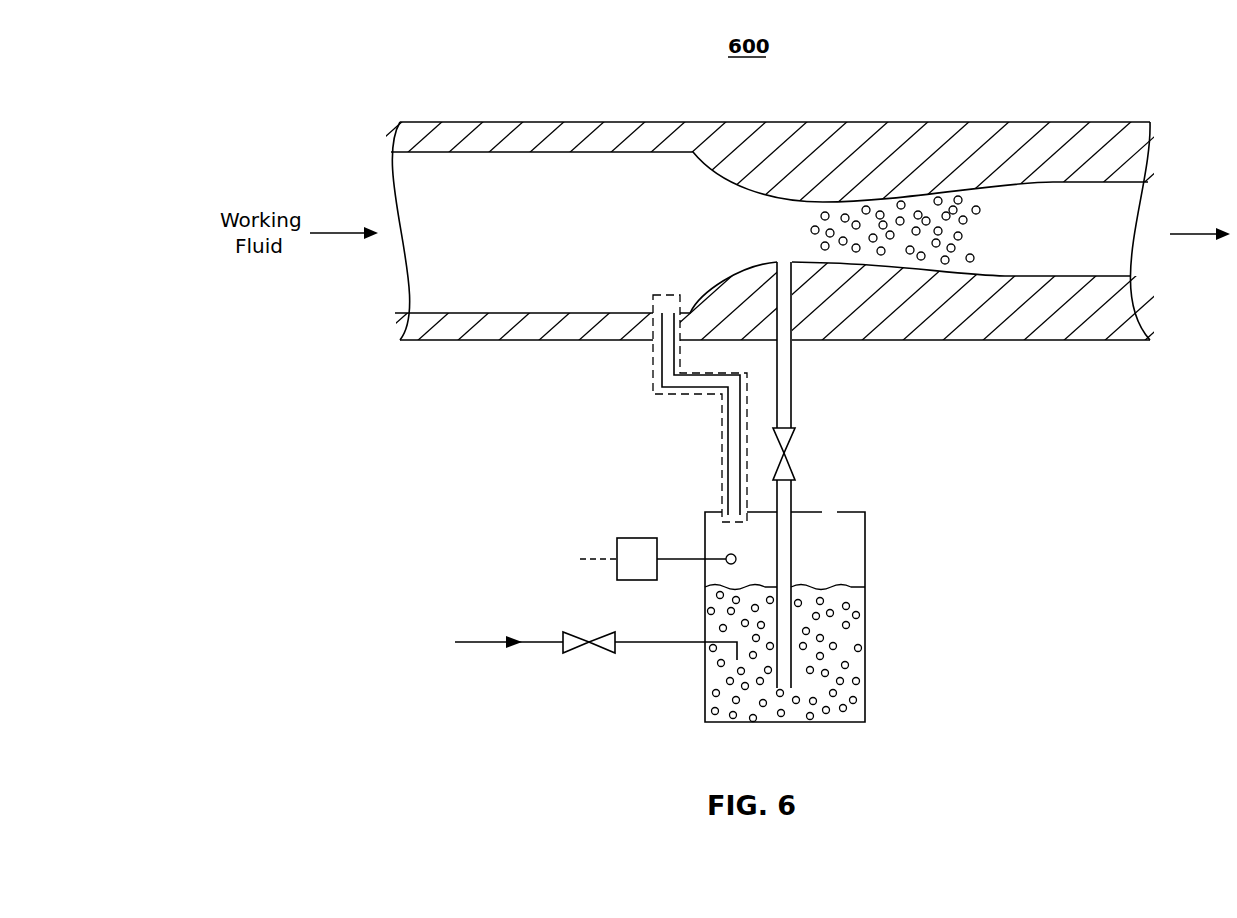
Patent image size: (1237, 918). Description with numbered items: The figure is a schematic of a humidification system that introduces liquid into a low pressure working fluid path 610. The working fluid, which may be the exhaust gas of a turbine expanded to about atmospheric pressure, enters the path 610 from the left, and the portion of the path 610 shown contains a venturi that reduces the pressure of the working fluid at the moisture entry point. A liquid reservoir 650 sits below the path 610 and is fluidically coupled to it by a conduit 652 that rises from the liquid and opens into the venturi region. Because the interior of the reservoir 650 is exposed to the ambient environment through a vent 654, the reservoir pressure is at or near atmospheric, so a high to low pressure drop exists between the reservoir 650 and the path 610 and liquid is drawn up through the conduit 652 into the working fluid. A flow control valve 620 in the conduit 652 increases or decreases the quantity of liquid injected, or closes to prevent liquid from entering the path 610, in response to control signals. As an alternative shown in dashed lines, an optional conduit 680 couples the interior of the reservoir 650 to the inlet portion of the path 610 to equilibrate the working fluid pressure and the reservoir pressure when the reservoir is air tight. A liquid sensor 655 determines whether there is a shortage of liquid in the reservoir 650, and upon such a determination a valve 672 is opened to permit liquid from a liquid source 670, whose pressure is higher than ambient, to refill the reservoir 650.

The low pressure working fluid path 610 is at (1002, 340).
The flow control valve 620 is at (793, 440).
The liquid reservoir 650 is at (866, 667).
The conduit 652 is at (793, 571).
The vent 654 is at (829, 502).
The liquid sensor 655 is at (601, 564).
The liquid source 670 is at (470, 646).
The valve 672 is at (590, 648).
The optional conduit 680 is at (720, 452).